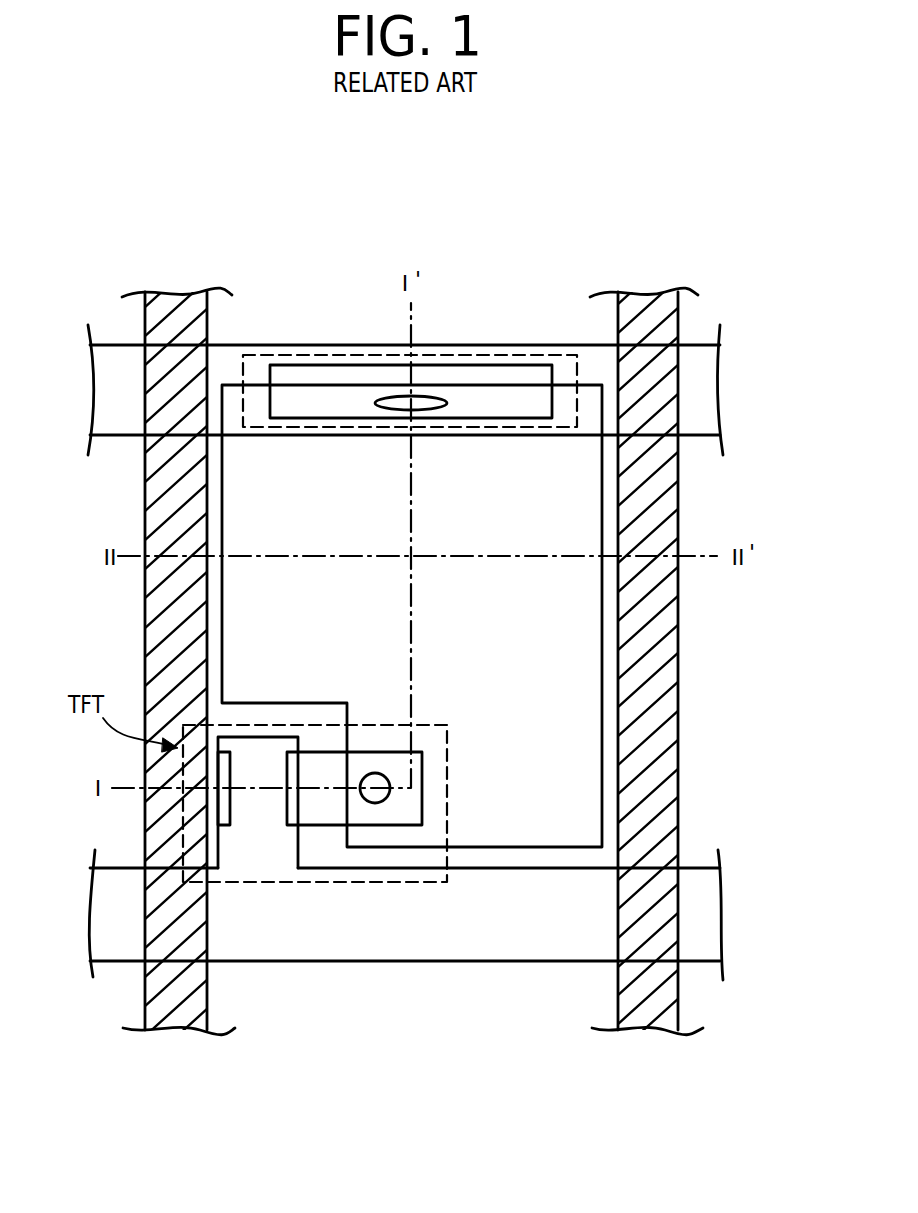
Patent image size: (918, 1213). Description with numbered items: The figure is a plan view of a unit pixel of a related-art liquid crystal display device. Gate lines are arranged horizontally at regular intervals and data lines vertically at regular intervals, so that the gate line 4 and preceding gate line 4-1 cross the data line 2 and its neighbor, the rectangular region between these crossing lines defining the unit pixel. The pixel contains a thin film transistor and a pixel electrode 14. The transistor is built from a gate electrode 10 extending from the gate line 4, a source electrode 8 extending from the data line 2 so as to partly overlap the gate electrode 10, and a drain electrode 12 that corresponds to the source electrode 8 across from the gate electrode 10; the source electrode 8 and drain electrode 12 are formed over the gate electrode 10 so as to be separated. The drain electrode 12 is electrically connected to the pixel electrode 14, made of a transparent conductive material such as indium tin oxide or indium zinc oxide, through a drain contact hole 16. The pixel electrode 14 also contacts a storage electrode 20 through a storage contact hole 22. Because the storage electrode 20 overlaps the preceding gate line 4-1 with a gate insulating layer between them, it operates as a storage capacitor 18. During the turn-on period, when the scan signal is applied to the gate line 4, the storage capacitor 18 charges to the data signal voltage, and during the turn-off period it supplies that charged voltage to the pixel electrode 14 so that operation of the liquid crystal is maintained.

The data line 2 is at (193, 998).
The gate line 4 is at (120, 948).
The preceding gate line 4-1 is at (120, 425).
The source electrode 8 is at (225, 752).
The gate electrode 10 is at (260, 750).
The drain electrode 12 is at (422, 762).
The pixel electrode 14 is at (580, 663).
The drain contact hole 16 is at (375, 773).
The storage capacitor 18 is at (307, 352).
The storage electrode 20 is at (537, 370).
The storage contact hole 22 is at (427, 403).